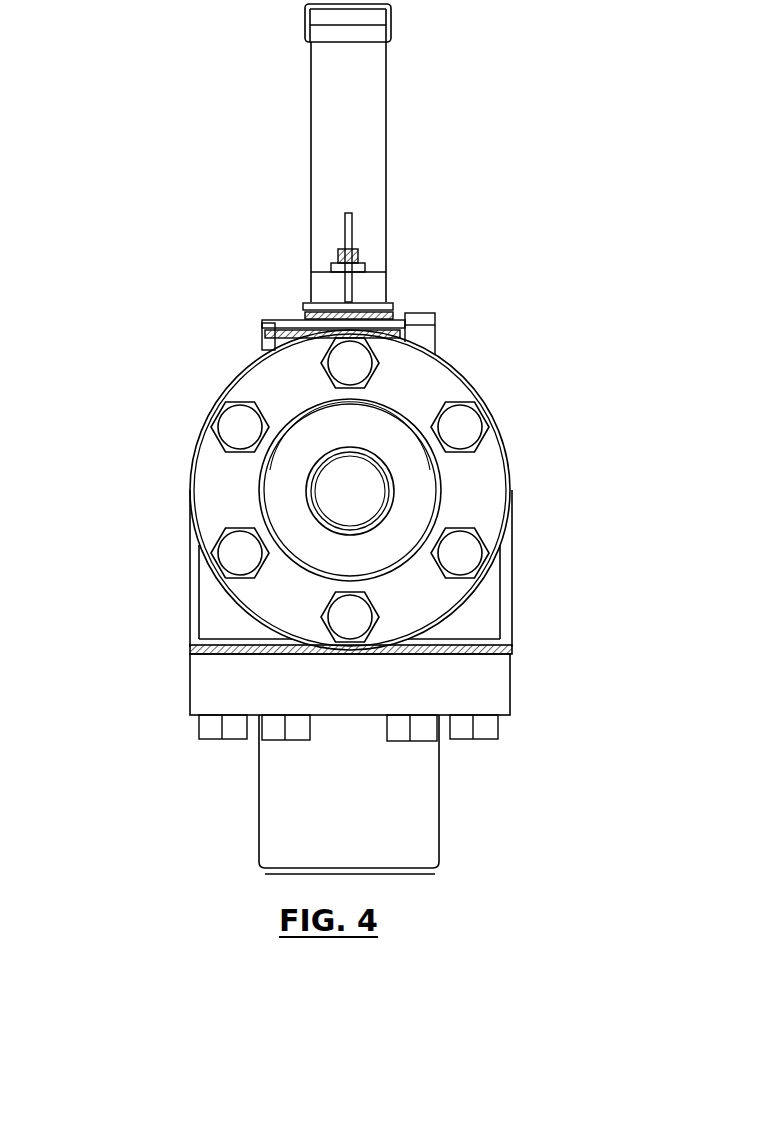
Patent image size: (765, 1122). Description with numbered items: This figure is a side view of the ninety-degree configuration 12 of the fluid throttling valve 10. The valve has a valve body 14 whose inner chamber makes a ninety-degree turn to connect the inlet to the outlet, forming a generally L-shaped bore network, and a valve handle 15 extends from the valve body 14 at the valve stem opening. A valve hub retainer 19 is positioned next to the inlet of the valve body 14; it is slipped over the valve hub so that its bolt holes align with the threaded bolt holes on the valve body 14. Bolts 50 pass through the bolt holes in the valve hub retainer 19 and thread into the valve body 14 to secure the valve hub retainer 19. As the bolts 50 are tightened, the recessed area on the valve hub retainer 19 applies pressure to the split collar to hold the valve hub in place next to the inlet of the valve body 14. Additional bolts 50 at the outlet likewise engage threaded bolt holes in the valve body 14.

The fluid throttling valve 10 is at (104, 145).
The 90-degree configuration 12 is at (516, 468).
The valve body 14 is at (511, 645).
The valve handle 15 is at (311, 125).
The valve hub retainer 19 is at (190, 685).
The bolts 50 is at (238, 426).